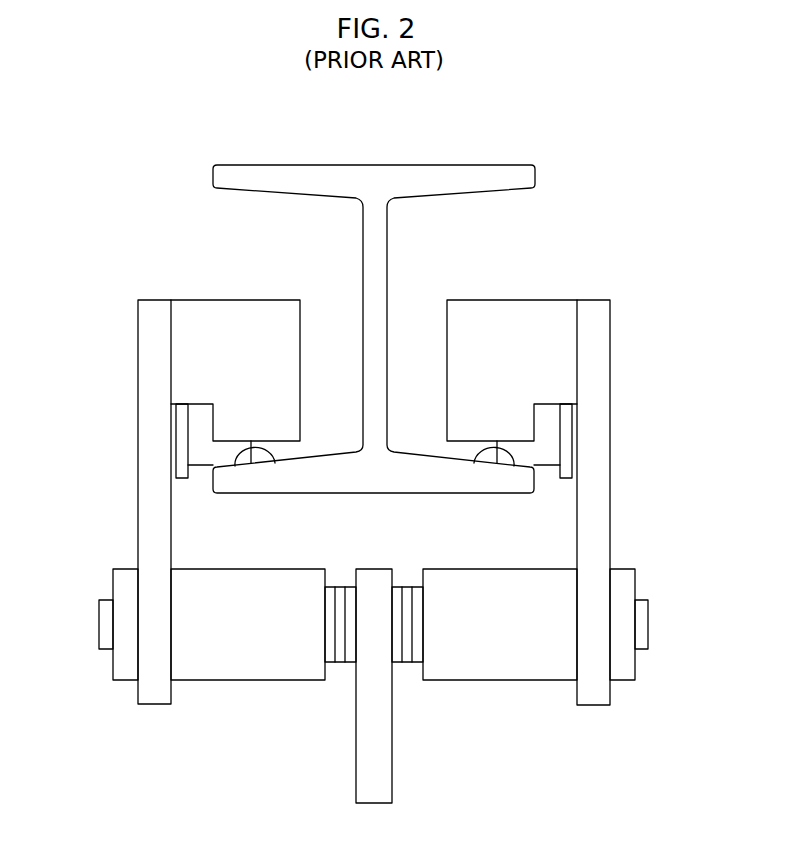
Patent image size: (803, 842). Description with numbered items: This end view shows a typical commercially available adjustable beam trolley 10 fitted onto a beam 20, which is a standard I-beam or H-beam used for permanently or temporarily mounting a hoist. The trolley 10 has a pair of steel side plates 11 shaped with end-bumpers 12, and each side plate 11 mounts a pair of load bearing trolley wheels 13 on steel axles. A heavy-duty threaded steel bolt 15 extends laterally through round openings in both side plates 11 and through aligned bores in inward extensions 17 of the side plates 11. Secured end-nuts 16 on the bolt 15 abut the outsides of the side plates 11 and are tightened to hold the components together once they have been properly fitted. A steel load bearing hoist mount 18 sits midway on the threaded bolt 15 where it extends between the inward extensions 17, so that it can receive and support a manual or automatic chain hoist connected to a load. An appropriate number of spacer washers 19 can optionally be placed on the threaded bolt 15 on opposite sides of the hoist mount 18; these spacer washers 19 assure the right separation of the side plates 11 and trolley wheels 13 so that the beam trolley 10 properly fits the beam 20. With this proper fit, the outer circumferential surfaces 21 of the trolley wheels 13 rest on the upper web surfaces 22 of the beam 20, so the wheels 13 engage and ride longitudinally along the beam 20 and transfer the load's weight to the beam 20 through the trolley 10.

The adjustable beam trolley 10 is at (162, 235).
The side plate 11 is at (138, 493).
The end-bumper 12 is at (228, 327).
The trolley wheel 13 is at (210, 453).
The threaded bolt 15 is at (99, 625).
The end-nut 16 is at (113, 588).
The inward extension 17 is at (240, 680).
The hoist mount 18 is at (392, 785).
The spacer washer 19 is at (340, 662).
The beam 20 is at (387, 245).
The outer circumferential surface 21 is at (202, 465).
The upper web surface 22 is at (275, 460).